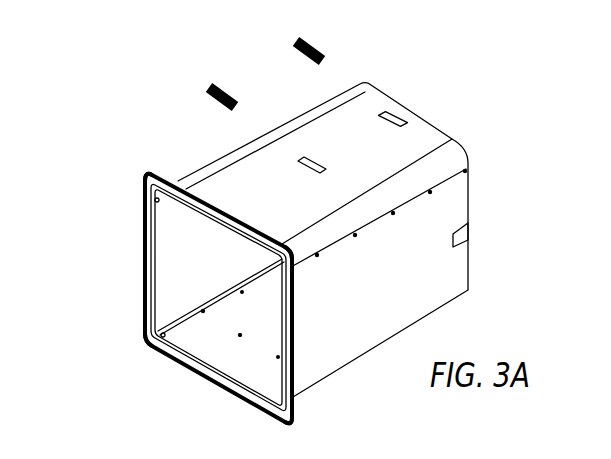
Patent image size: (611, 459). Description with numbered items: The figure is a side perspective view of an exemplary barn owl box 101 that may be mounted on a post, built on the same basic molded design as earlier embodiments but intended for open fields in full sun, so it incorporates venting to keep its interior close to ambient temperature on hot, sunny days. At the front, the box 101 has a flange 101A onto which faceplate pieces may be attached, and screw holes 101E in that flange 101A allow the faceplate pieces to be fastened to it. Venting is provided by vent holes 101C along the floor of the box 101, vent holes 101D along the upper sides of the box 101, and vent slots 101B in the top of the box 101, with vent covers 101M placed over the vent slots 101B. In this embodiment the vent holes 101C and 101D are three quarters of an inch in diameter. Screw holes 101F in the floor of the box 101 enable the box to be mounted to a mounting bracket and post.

The barn owl box 101 is at (216, 150).
The flange 101A is at (247, 403).
The vent slots 101B is at (331, 164).
The vent holes 101C is at (198, 309).
The vent holes 101D is at (437, 192).
The screw holes 101E is at (164, 178).
The screw holes 101F is at (233, 324).
The vent covers 101M is at (284, 43).